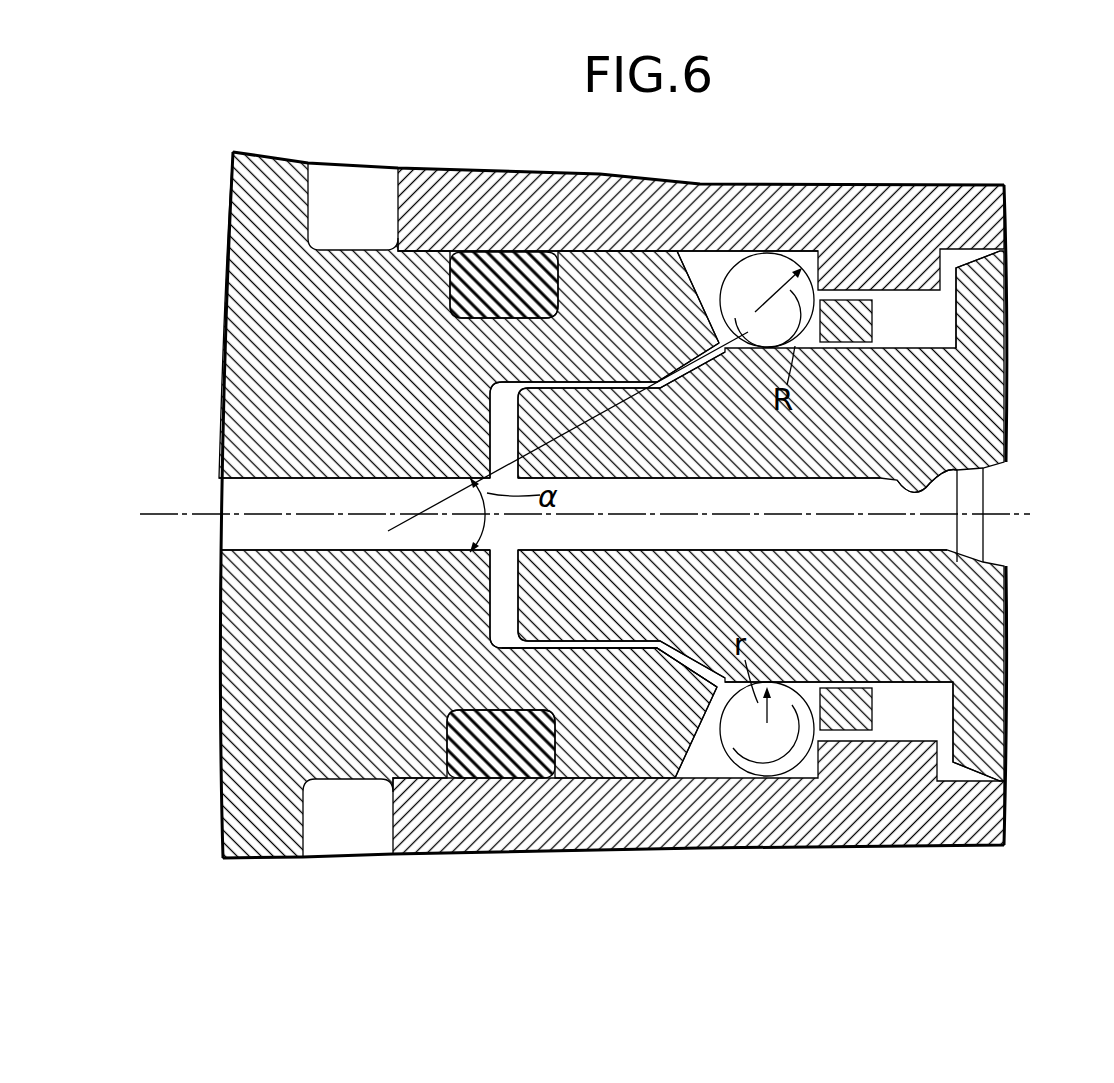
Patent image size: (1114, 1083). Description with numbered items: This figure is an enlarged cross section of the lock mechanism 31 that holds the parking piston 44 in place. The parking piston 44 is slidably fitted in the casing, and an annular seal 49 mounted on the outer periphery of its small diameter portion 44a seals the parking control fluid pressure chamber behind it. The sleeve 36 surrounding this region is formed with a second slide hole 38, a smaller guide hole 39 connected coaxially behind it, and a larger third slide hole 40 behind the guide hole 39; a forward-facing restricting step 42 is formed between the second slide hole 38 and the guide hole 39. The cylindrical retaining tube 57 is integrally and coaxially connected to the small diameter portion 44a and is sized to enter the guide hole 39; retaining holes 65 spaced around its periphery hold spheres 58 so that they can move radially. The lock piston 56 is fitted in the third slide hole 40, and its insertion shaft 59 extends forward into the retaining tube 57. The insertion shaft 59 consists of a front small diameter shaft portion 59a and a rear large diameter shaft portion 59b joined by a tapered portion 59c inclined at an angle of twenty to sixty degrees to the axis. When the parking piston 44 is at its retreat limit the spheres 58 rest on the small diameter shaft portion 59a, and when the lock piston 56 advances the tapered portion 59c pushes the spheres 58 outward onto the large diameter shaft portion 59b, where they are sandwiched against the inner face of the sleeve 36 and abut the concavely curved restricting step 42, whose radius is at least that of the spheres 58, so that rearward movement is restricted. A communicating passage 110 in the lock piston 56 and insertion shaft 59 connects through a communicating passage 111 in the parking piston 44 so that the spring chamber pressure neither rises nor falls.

The parking piston 44 is at (273, 187).
The annular seal 49 is at (512, 272).
The small diameter portion 44a is at (613, 262).
The second slide hole 38 is at (677, 253).
The spheres 58 is at (772, 272).
The sleeve 36 is at (930, 203).
The third slide hole 40 is at (978, 252).
The guide hole 39 is at (862, 327).
The cylindrical retaining tube 57 is at (958, 340).
The communicating passage 110 is at (1006, 460).
The communicating passage 111 is at (267, 477).
The insertion shaft 59 is at (505, 423).
The retaining holes 65 is at (818, 420).
The large diameter shaft portion 59b is at (915, 686).
The lock piston 56 is at (978, 750).
The small diameter shaft portion 59a is at (604, 645).
The tapered portion 59c is at (700, 665).
The restricting step 42 is at (773, 752).
The lock mechanism 31 is at (900, 700).